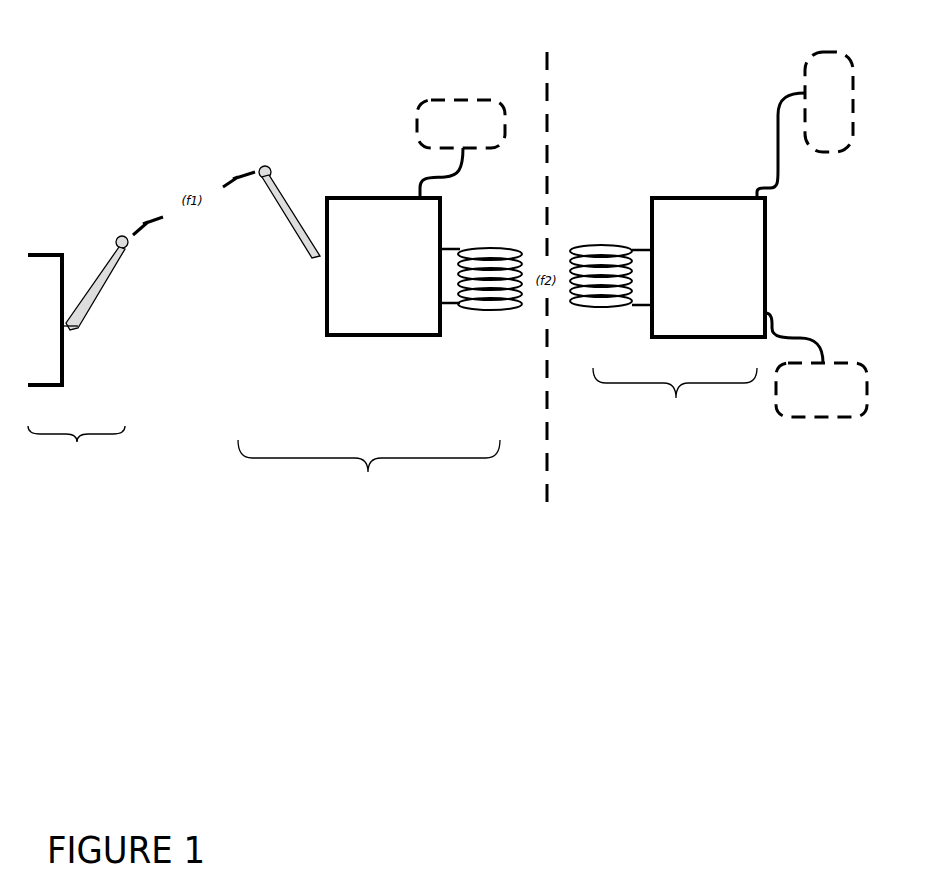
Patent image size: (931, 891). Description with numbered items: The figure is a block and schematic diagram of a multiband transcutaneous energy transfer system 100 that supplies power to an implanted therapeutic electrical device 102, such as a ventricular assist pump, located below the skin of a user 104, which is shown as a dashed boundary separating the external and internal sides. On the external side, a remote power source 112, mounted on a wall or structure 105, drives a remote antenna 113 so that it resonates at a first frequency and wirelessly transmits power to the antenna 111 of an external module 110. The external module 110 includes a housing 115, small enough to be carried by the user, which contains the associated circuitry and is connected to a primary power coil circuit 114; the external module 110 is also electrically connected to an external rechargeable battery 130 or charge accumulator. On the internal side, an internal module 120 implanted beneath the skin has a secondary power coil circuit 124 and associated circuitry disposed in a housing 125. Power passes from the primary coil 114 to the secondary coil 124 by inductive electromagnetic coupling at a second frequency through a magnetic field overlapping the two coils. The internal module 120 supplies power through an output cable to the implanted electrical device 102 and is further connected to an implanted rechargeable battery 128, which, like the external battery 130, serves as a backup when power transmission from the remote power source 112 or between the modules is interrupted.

The multiband transcutaneous energy transfer (TET) system 100 is at (430, 866).
The implanted therapeutic electrical device 102 is at (850, 425).
The user 104 is at (570, 278).
The wall/structure 105 is at (70, 350).
The external module 110 is at (369, 470).
The antenna 111 is at (285, 178).
The remote power source 112 is at (76, 447).
The remote antenna 113 is at (96, 235).
The primary power coil circuit 114 is at (513, 305).
The housing 115 is at (357, 340).
The internal module 120 is at (675, 398).
The secondary power coil circuit 124 is at (597, 240).
The housing 125 is at (683, 190).
The rechargeable battery 128 is at (800, 55).
The external rechargeable battery 130 is at (412, 95).